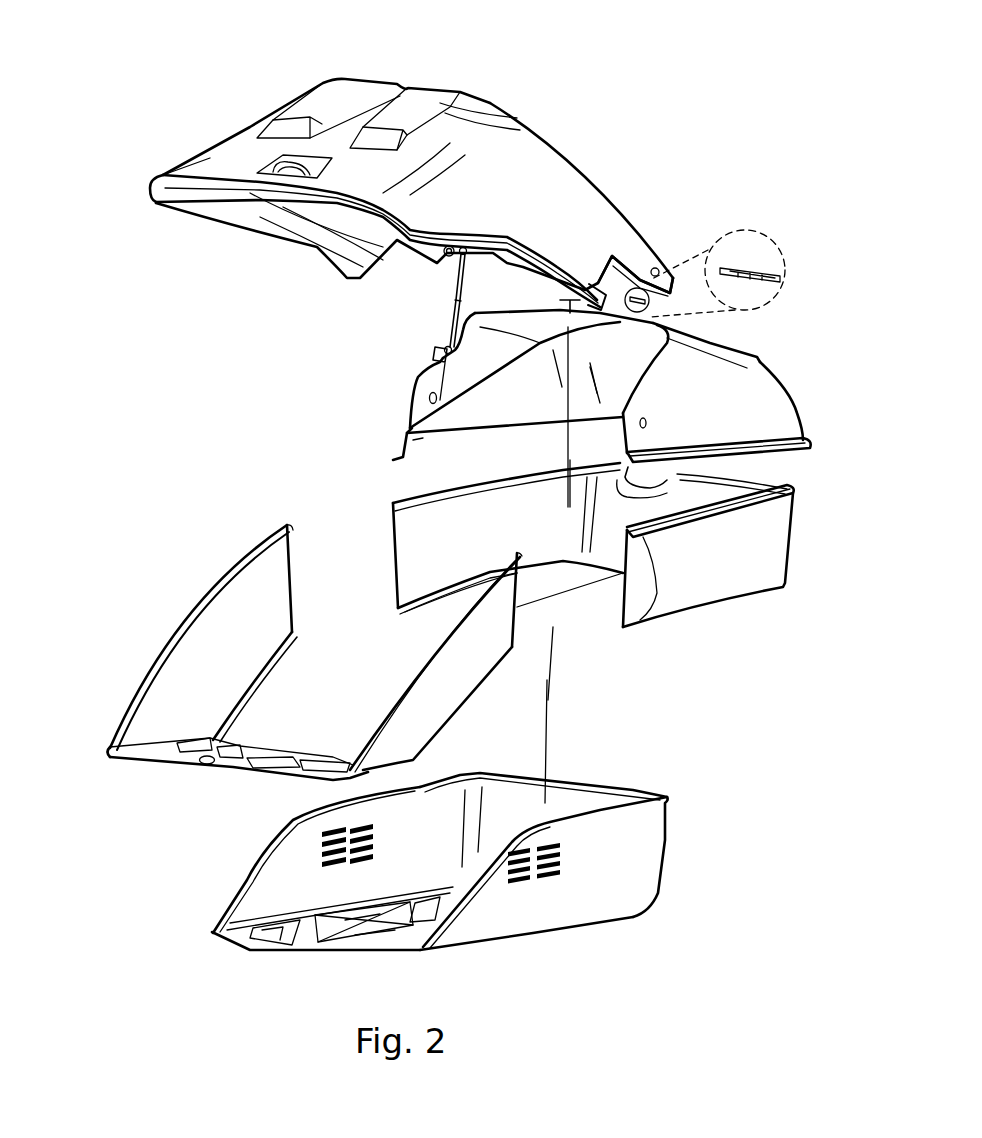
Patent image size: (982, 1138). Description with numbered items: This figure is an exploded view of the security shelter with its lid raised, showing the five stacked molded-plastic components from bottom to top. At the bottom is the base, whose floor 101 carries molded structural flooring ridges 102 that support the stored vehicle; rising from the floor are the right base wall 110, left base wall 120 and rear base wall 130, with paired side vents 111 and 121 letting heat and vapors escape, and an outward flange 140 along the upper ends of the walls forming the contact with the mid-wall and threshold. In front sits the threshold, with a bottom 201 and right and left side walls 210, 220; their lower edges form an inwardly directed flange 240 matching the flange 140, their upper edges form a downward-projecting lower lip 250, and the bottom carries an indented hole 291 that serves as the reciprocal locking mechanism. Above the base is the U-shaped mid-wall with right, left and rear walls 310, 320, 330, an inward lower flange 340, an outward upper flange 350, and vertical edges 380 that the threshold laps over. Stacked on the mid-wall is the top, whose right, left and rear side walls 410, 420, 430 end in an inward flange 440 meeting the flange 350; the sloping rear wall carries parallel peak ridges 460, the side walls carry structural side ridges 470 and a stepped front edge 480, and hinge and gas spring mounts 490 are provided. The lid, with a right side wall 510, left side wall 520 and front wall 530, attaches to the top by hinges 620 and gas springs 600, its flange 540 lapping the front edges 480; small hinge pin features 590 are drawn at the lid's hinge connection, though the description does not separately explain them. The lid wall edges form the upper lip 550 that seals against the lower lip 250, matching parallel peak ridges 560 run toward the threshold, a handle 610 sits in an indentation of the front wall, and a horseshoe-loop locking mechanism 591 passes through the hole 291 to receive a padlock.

The floor 101 is at (243, 938).
The structural flooring ridges 102 is at (367, 920).
The right base wall 110 is at (627, 873).
The side vents 111 is at (543, 880).
The left base wall 120 is at (273, 897).
The side vents 121 is at (317, 853).
The rear base wall 130 is at (597, 795).
The outward flange 140 is at (443, 927).
The threshold bottom 201 is at (160, 748).
The right side wall of threshold 210 is at (450, 695).
The left side wall of threshold 220 is at (210, 677).
The inwardly directed flange 240 is at (297, 633).
The lower lip 250 is at (217, 597).
The reciprocal locking mechanism 291 is at (207, 763).
The right mid-wall 310 is at (700, 580).
The left mid-wall 320 is at (405, 530).
The rear mid-wall 330 is at (793, 493).
The lower flange 340 is at (407, 612).
The upper flange 350 is at (645, 543).
The vertical edge 380 is at (607, 598).
The right side wall of top 410 is at (767, 410).
The left side wall of top 420 is at (417, 440).
The rear side wall of top 430 is at (703, 345).
The inward flange of top 440 is at (813, 447).
The parallel peak ridges 460 is at (705, 318).
The structural side ridges 470 is at (758, 360).
The front edge 480 is at (413, 387).
The hinge and gas spring mounts 490 is at (430, 405).
The right side wall of lid 510 is at (573, 200).
The left side wall of lid 520 is at (340, 213).
The front wall of lid 530 is at (210, 163).
The lid flange 540 is at (640, 257).
The upper lip 550 is at (542, 137).
The parallel peak ridges 560 is at (350, 87).
The hinge pin 590 is at (452, 263).
The locking mechanism 591 is at (263, 193).
The gas springs 600 is at (447, 316).
The handle 610 is at (277, 160).
The hinges 620 is at (760, 268).